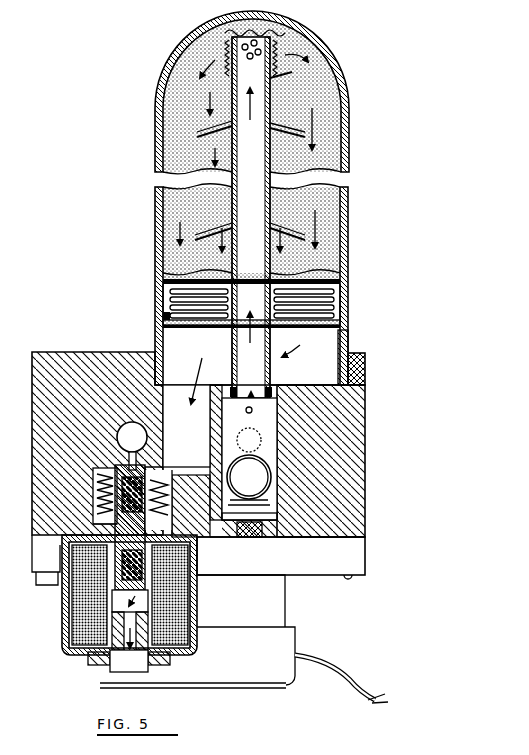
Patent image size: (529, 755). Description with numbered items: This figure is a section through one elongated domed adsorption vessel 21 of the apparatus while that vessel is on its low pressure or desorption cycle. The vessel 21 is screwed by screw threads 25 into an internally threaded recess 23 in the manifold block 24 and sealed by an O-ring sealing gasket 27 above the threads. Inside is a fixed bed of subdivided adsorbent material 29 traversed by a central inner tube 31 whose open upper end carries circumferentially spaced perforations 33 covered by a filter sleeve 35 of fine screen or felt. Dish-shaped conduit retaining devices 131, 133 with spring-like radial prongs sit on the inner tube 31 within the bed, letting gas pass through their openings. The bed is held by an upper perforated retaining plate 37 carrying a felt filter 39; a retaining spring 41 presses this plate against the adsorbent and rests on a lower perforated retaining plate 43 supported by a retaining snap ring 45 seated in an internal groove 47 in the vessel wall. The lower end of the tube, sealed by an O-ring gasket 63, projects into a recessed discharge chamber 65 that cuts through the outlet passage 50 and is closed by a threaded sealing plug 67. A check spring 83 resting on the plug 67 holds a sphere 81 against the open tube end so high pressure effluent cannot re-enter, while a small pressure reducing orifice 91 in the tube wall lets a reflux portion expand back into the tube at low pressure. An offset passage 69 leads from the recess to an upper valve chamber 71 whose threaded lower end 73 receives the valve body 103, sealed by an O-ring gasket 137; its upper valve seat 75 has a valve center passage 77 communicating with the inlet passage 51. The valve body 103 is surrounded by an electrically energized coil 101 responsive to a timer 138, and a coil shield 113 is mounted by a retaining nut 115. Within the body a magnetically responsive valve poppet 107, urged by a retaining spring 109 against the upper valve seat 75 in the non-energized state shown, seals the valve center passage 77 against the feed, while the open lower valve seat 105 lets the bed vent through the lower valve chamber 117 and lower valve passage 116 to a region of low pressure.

The adsorption vessel 21 is at (350, 118).
The internally threaded recess 23 is at (352, 388).
The manifold block 24 is at (68, 352).
The screw threads 25 is at (358, 365).
The O-ring sealing gasket 27 is at (345, 352).
The adsorbent material 29 is at (251, 229).
The inner tube 31 is at (271, 163).
The perforations 33 is at (262, 40).
The filter sleeve 35 is at (228, 42).
The upper perforated retaining plate 37 is at (343, 282).
The filter 39 is at (325, 262).
The retaining spring 41 is at (336, 302).
The lower perforated retaining plate 43 is at (165, 312).
The retaining snap ring 45 is at (163, 322).
The internal groove 47 is at (163, 330).
The outlet passage 50 is at (249, 440).
The inlet passage 51 is at (132, 446).
The O-ring gasket 63 is at (270, 388).
The discharge chamber 65 is at (218, 412).
The threaded sealing plug 67 is at (225, 537).
The offset passage 69 is at (186, 412).
The upper valve chamber 71 is at (93, 500).
The threaded lower end 73 is at (52, 540).
The upper valve seat 75 is at (95, 476).
The valve center passage 77 is at (93, 468).
The sphere 81 is at (249, 459).
The check spring 83 is at (272, 537).
The pressure reducing orifice 91 is at (252, 411).
The electrically energized coil 101 is at (72, 628).
The valve body 103 is at (50, 575).
The lower valve seat 105 is at (148, 614).
The valve poppet 107 is at (172, 488).
The retaining spring 109 is at (90, 512).
The coil shield 113 is at (62, 585).
The retaining nut 115 is at (150, 668).
The lower valve passage 116 is at (125, 683).
The lower valve chamber 117 is at (148, 600).
The conduit retaining device 131 is at (248, 222).
The conduit retaining device 133 is at (258, 110).
The O-ring gasket 137 is at (205, 555).
The timer 138 is at (312, 642).